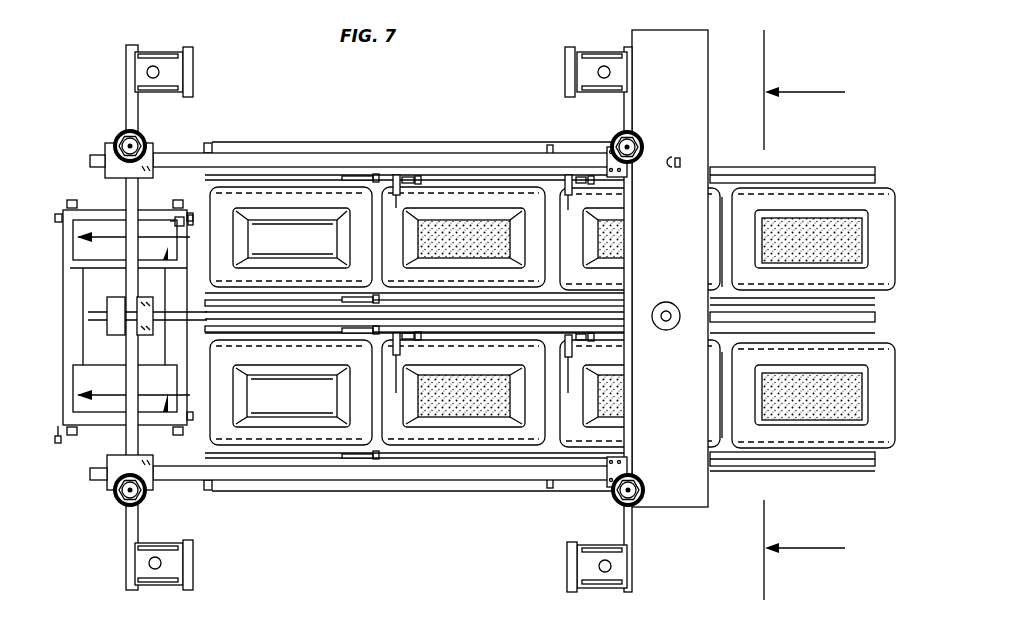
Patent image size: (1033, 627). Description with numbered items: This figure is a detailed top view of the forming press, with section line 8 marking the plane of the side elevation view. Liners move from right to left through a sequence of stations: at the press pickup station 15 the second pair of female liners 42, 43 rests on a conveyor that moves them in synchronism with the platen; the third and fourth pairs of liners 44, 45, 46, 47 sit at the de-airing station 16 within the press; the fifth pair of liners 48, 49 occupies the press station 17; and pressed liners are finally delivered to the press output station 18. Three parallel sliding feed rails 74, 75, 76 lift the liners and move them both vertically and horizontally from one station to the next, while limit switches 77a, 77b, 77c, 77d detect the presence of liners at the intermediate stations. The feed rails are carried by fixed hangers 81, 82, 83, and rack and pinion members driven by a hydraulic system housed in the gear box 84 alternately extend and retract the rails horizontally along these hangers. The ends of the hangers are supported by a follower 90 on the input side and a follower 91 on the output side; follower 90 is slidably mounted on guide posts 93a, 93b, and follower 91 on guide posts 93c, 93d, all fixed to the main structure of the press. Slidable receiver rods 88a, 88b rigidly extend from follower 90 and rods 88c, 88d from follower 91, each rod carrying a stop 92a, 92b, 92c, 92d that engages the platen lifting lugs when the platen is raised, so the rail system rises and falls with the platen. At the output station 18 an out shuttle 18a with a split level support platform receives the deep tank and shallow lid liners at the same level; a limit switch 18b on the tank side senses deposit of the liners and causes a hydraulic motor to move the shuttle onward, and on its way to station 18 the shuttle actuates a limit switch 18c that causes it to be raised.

The section line 8- 8 is at (813, 315).
The press pickup station 15 is at (848, 56).
The de-airing station 16 is at (439, 108).
The press station 17 is at (258, 103).
The press output station 18 is at (93, 81).
The out shuttle 18a is at (116, 363).
The limit switch 18b is at (175, 218).
The limit switch 18c is at (60, 443).
The female liner 42 is at (883, 450).
The female liner 43 is at (884, 188).
The liner 44 is at (712, 470).
The liner 45 is at (712, 180).
The liner 46 is at (440, 446).
The liner 47 is at (470, 192).
The liner 48 is at (213, 428).
The liner 49 is at (212, 203).
The sliding feed rail 74 is at (823, 178).
The sliding feed rail 75 is at (874, 321).
The sliding feed rail 76 is at (813, 457).
The limit switch 77a is at (385, 195).
The limit switch 77b is at (564, 197).
The limit switch 77c is at (564, 356).
The limit switch 77d is at (387, 355).
The fixed hanger 81 is at (187, 155).
The fixed hanger 82 is at (198, 320).
The fixed hanger 83 is at (187, 480).
The gear box 84 is at (680, 83).
The slidable receiver rod 88a is at (647, 490).
The slidable receiver rod 88b is at (633, 136).
The slidable receiver rod 88c is at (137, 507).
The slidable receiver rod 88d is at (141, 140).
The follower 90 is at (630, 276).
The follower 91 is at (123, 249).
The stop 92a is at (637, 472).
The stop 92b is at (645, 148).
The stop 92c is at (120, 500).
The stop 92d is at (120, 137).
The guide post 93a is at (591, 560).
The guide post 93b is at (588, 62).
The guide post 93c is at (163, 568).
The guide post 93d is at (167, 63).